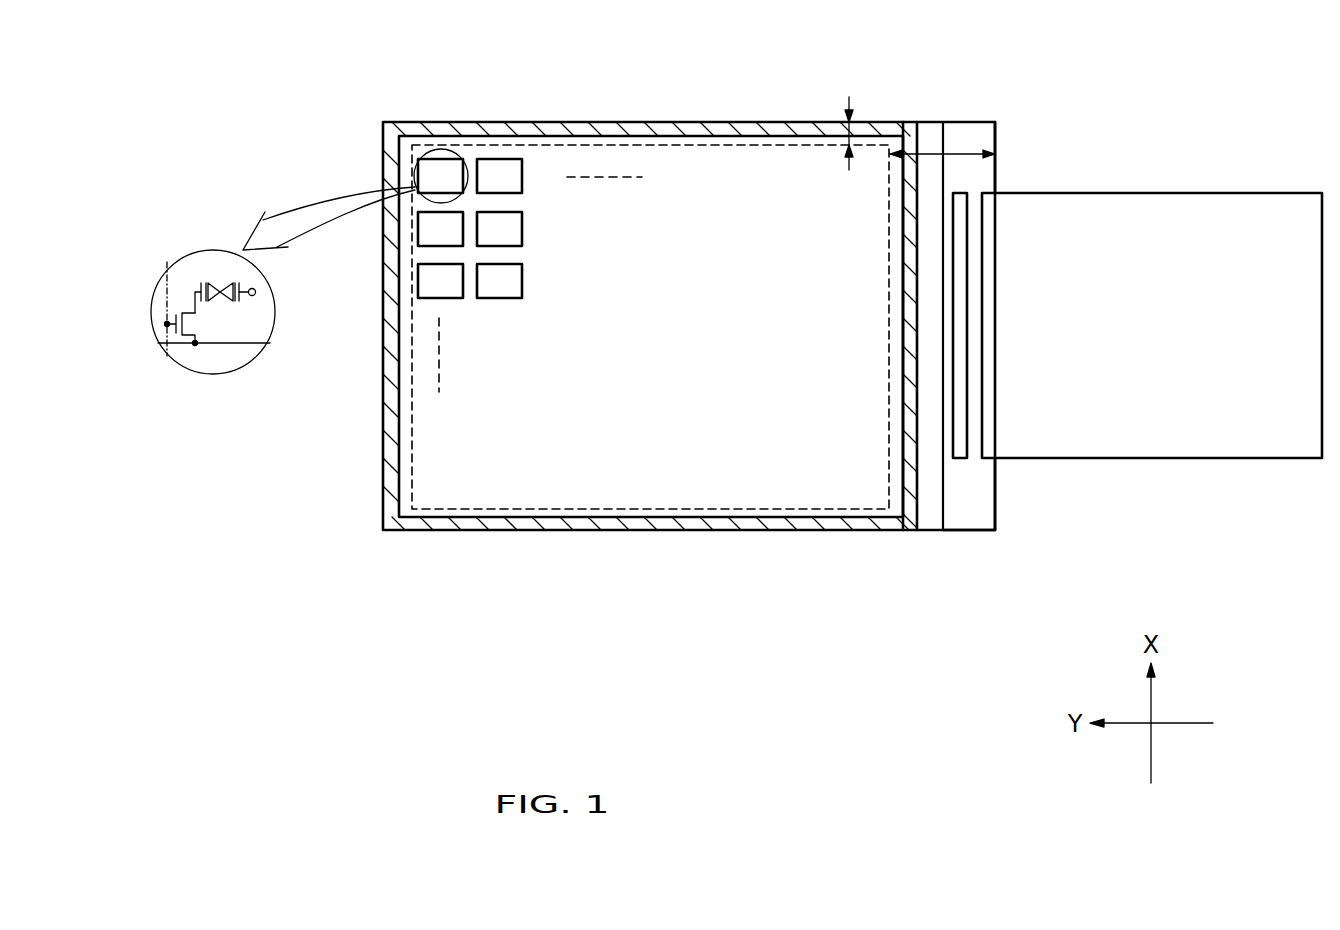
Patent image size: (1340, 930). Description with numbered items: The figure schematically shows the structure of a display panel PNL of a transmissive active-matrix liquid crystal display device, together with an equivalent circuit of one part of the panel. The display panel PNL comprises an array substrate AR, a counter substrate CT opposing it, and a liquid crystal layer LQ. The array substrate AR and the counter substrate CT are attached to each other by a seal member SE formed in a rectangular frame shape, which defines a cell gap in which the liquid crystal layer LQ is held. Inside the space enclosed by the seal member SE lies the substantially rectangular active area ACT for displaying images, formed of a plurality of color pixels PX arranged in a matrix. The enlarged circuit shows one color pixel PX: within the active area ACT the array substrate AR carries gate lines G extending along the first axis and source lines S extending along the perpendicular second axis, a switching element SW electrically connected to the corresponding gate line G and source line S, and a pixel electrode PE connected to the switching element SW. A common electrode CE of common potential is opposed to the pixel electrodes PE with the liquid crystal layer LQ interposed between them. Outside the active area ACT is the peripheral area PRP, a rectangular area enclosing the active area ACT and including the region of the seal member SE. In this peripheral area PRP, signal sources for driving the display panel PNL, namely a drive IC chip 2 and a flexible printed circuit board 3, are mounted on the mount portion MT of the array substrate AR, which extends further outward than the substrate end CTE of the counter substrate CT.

The display panel PNL is at (966, 536).
The seal member SE is at (712, 122).
The counter substrate CT is at (930, 521).
The substrate end CTE is at (950, 142).
The array substrate AR is at (985, 515).
The mount portion MT is at (978, 468).
The active area ACT is at (765, 514).
The peripheral area PRP is at (848, 130).
The drive IC chip 2 is at (955, 193).
The flexible printed circuit board 3 is at (1163, 193).
The color pixel PX is at (440, 158).
The gate line G is at (157, 297).
The source line S is at (228, 348).
The switching element SW is at (200, 323).
The pixel electrode PE is at (197, 283).
The liquid crystal layer LQ is at (220, 280).
The common electrode CE is at (262, 292).